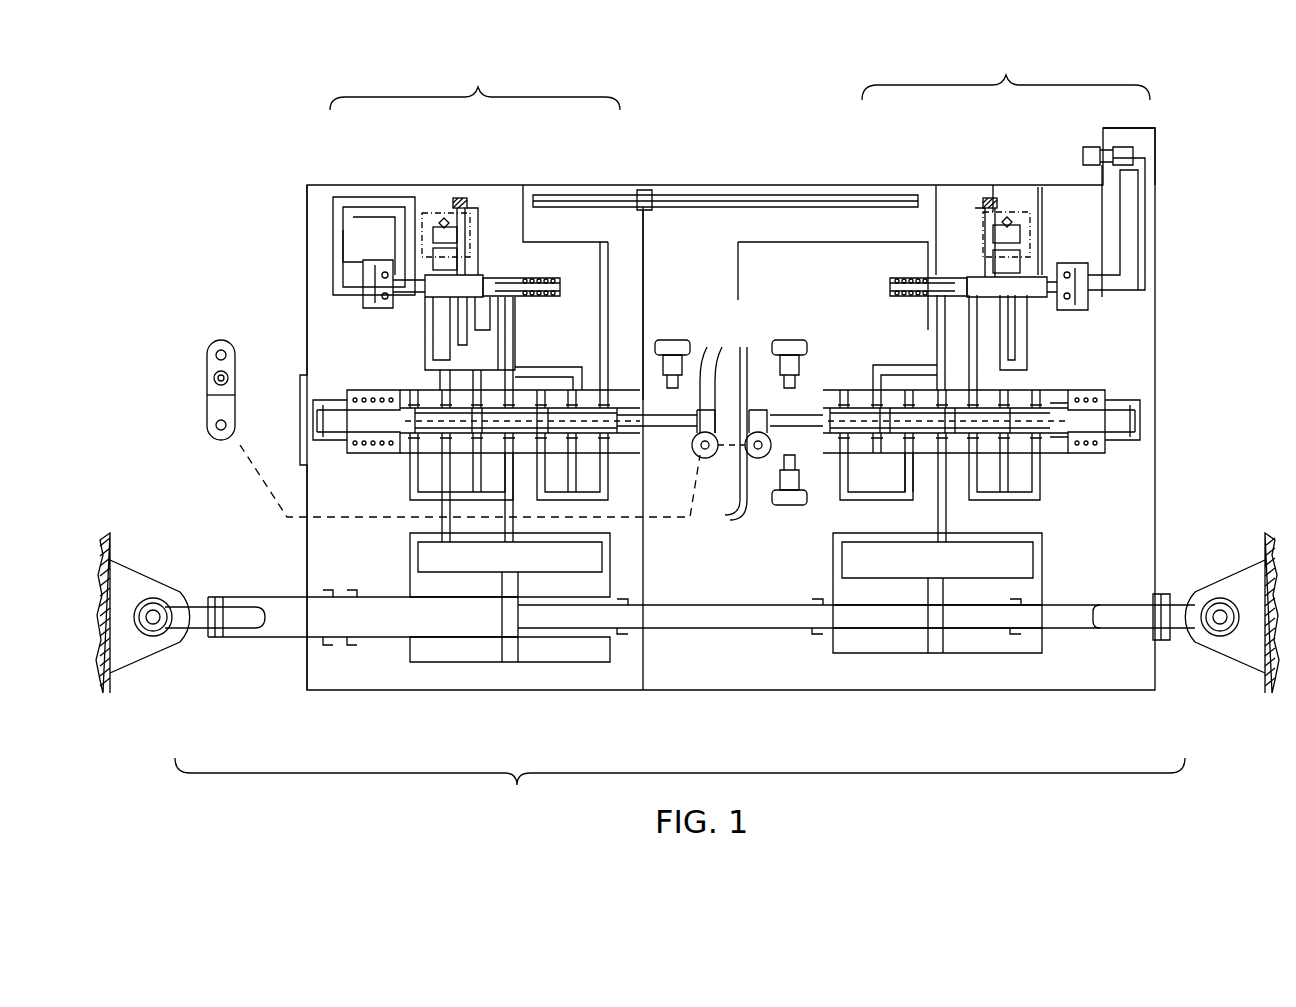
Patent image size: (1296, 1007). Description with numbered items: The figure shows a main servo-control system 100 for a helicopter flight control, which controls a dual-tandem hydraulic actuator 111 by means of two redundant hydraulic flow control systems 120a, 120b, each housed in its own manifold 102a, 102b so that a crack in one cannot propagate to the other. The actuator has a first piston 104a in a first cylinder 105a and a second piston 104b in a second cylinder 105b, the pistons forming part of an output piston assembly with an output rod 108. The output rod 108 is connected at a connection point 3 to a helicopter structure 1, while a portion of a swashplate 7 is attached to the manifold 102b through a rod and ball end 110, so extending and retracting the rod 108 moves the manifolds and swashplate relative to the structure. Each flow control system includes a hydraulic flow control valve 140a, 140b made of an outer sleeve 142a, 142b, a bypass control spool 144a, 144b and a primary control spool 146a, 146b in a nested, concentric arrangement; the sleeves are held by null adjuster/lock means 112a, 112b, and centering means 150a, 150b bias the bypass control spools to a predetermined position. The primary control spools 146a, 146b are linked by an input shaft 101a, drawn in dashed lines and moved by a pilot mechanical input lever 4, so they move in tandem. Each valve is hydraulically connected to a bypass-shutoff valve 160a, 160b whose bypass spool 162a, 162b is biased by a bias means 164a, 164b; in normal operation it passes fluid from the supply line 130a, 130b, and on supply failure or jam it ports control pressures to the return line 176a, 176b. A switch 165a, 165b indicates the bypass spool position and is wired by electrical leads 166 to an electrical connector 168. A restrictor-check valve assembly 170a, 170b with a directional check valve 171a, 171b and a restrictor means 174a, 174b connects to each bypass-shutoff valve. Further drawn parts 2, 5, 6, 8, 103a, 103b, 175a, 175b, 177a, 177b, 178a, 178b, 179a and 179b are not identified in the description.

The servoactuator control system 100 is at (757, 77).
The first manifold 102a is at (305, 210).
The second manifold 102b is at (1156, 143).
The dual-tandem hydraulic actuator 111 is at (680, 787).
The first hydraulic flow control system 120a is at (475, 81).
The second hydraulic flow control system 120b is at (1006, 70).
The output rod 108 is at (240, 640).
The spherical bearing 5 is at (165, 595).
The rod and ball end 110 is at (1220, 642).
The connection point 3 is at (140, 672).
The structure 1 is at (105, 692).
The helicopter swashplate 7 is at (1268, 692).
The first cylinder 105a is at (598, 692).
The first piston 104a is at (505, 668).
The second cylinder 105b is at (1027, 692).
The second piston 104b is at (933, 668).
The input shaft 101a is at (255, 470).
The pilot mechanical input lever 4 is at (215, 338).
The fastener 6 is at (230, 378).
The hole 8 is at (216, 425).
The first centering means 150a is at (362, 456).
The first outer sleeve 142a is at (425, 385).
The first primary control spool 146a is at (590, 437).
The first bypass control spool 144a is at (636, 400).
The first coupling eye 103a is at (697, 452).
The second coupling eye 103b is at (762, 470).
The first hydraulic flow control valve 140a is at (735, 345).
The second hydraulic flow control valve 140b is at (735, 512).
The first hydraulic null adjuster/lock means 112a is at (672, 338).
The second hydraulic null adjuster/lock means 112b is at (789, 338).
The second outer sleeve 142b is at (873, 385).
The second primary control spool 146b is at (845, 405).
The second bypass control spool 144b is at (1052, 400).
The second centering means 150b is at (1103, 456).
The first restrictor-check valve assembly 170a is at (350, 200).
The first coil lead 177a is at (398, 215).
The electrical leads 166 is at (727, 194).
The first switch 165a is at (365, 300).
The first bypass spool 162a is at (430, 297).
The first restrictor means 174a is at (432, 232).
The first solenoid core 178a is at (432, 258).
The first supply line 130a is at (455, 198).
The first directional check valve 171a is at (445, 220).
The first seal 179a is at (468, 200).
The first stem 175a is at (480, 215).
The first return line 176a is at (527, 190).
The first bypass-shutoff valve 160a is at (550, 278).
The first bias means 164a is at (540, 298).
The centerline 2 is at (650, 222).
The second return line 176b is at (742, 240).
The second bypass-shutoff valve 160b is at (890, 285).
The second bias means 164b is at (905, 298).
The second bypass spool 162b is at (1005, 297).
The second switch 165b is at (1090, 300).
The second restrictor means 174b is at (1022, 236).
The second solenoid core 178b is at (1022, 262).
The second supply line 130b is at (990, 198).
The second directional check valve 171b is at (1008, 220).
The second seal 179b is at (985, 200).
The second stem 175b is at (983, 215).
The second coil lead 177b is at (1040, 187).
The second restrictor-check valve assembly 170b is at (1145, 200).
The electrical connector 168 is at (1092, 145).